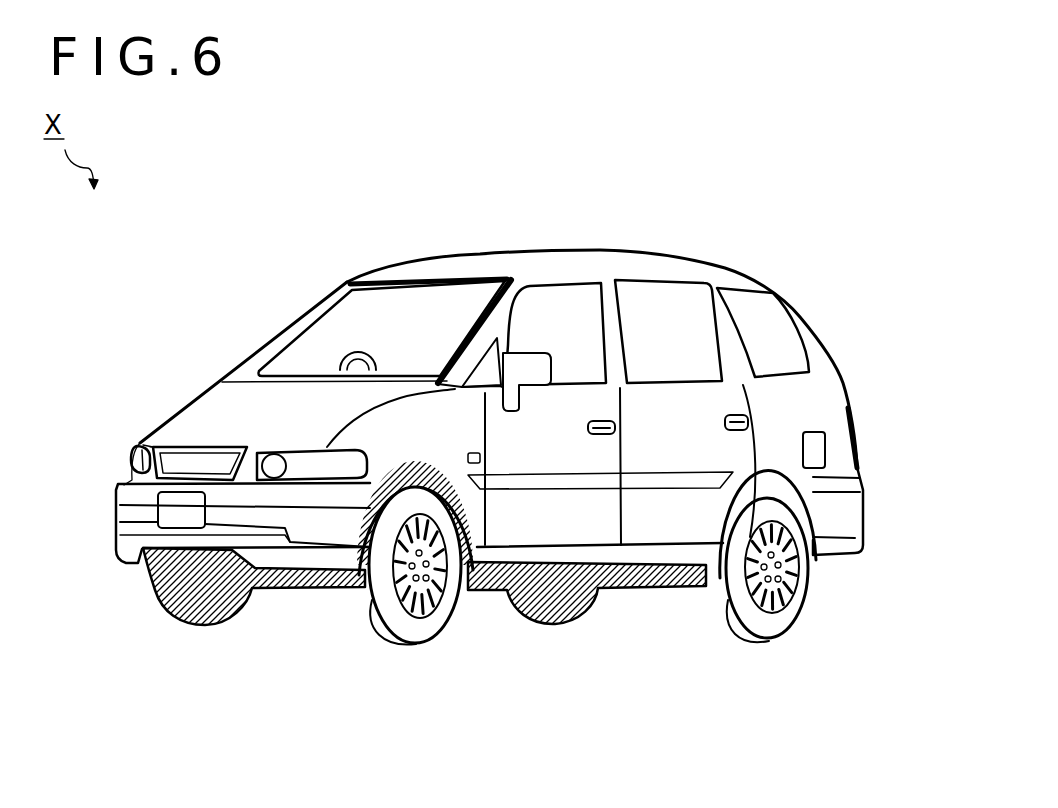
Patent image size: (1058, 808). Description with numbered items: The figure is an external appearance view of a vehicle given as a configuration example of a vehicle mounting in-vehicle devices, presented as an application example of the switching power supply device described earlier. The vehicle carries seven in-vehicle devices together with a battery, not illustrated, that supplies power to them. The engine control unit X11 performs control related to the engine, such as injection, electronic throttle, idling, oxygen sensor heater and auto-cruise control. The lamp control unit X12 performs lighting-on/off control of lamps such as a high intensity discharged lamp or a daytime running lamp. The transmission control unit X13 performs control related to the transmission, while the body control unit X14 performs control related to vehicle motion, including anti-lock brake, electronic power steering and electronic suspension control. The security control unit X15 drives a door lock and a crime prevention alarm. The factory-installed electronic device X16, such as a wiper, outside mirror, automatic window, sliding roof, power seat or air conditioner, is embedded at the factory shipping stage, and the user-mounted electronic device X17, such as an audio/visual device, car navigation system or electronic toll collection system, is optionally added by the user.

The engine control unit X11 is at (230, 413).
The lamp control unit X12 is at (137, 446).
The transmission control unit X13 is at (340, 594).
The body control unit X14 is at (693, 587).
The security control unit X15 is at (757, 427).
The electronic device embedded at factory shipping stage X16 is at (677, 305).
The electronic device optionally mounted by a user X17 is at (410, 362).